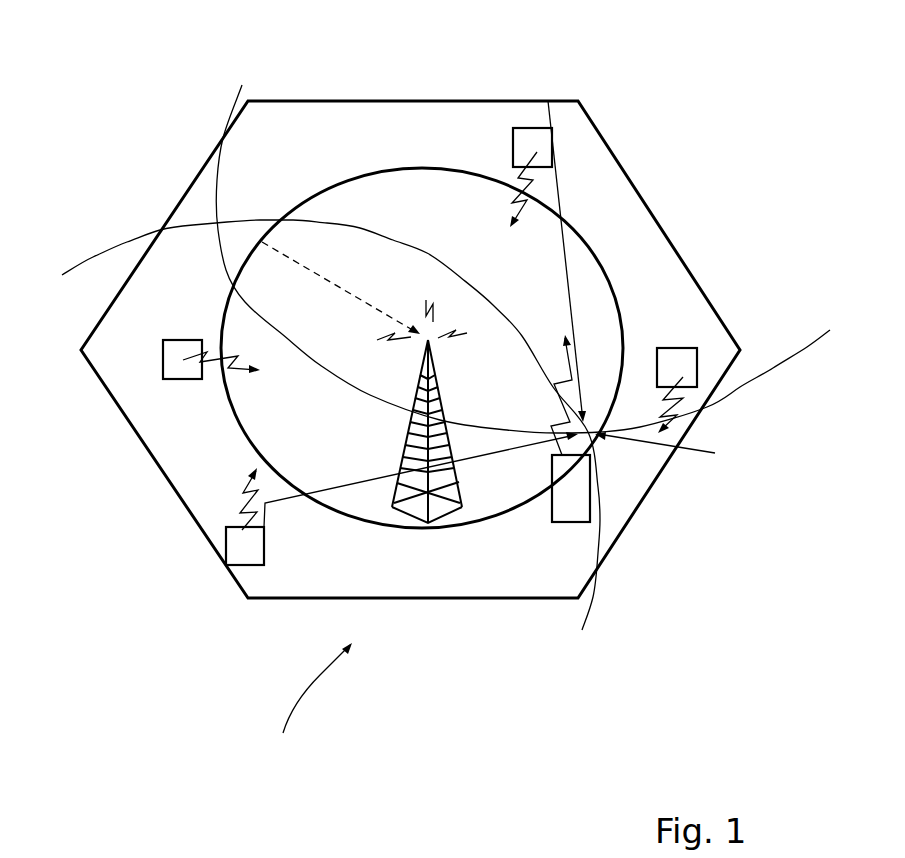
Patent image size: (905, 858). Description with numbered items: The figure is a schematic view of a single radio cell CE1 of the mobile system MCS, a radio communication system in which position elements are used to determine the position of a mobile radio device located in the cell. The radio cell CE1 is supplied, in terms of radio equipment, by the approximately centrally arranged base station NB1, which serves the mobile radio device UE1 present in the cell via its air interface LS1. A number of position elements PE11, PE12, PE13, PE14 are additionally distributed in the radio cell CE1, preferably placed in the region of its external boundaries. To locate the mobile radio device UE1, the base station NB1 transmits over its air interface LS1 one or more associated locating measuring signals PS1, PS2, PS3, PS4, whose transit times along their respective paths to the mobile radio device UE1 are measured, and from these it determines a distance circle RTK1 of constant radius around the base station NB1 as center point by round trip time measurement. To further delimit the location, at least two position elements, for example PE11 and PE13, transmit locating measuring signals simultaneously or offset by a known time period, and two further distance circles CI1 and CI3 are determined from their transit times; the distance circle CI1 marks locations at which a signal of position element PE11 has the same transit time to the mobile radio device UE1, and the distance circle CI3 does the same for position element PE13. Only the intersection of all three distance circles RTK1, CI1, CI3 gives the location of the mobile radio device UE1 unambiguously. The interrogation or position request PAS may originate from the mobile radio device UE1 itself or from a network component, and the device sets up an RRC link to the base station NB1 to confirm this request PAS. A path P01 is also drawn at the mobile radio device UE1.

The radio cell CE1 is at (349, 117).
The distance circle RTK1 is at (420, 165).
The position element PE11 is at (533, 128).
The position element PE12 is at (163, 360).
The position element PE13 is at (227, 545).
The position element PE14 is at (697, 362).
The locating measuring signal PS1 is at (533, 183).
The locating measuring signal PS2 is at (233, 367).
The locating measuring signal PS3 is at (247, 503).
The locating measuring signal PS4 is at (680, 405).
The position request PAS is at (570, 367).
The air interface LS1 is at (460, 343).
The distance circle CI1 is at (811, 349).
The distance circle CI3 is at (594, 599).
The position path P01 is at (697, 447).
The mobile radio device UE1 is at (590, 497).
The base station NB1 is at (440, 487).
The mobile system MCS is at (301, 713).